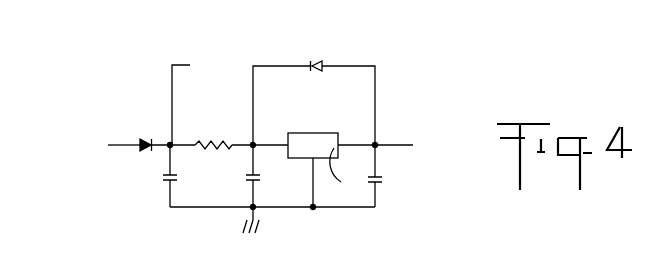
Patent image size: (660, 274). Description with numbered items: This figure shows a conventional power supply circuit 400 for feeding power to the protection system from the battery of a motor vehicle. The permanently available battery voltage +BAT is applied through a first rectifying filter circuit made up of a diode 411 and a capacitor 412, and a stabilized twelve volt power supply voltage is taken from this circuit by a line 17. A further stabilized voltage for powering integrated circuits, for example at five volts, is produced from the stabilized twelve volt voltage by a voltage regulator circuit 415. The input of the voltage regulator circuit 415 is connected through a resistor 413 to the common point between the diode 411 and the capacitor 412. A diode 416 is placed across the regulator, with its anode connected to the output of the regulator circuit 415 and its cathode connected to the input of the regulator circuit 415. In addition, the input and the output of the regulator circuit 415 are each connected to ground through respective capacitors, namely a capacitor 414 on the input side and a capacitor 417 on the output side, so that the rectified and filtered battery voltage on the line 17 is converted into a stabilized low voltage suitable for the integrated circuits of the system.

The power supply circuit 400 is at (406, 111).
The line 17 is at (185, 64).
The diode 411 is at (136, 150).
The capacitor 412 is at (166, 183).
The resistor 413 is at (222, 141).
The capacitor 414 is at (246, 182).
The voltage regulator circuit 415 is at (331, 131).
The diode 416 is at (319, 62).
The capacitor 417 is at (380, 184).